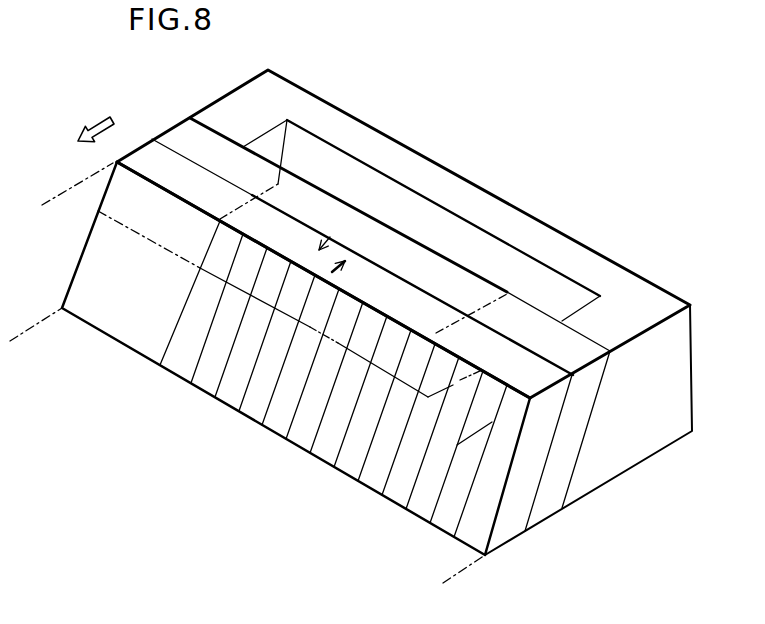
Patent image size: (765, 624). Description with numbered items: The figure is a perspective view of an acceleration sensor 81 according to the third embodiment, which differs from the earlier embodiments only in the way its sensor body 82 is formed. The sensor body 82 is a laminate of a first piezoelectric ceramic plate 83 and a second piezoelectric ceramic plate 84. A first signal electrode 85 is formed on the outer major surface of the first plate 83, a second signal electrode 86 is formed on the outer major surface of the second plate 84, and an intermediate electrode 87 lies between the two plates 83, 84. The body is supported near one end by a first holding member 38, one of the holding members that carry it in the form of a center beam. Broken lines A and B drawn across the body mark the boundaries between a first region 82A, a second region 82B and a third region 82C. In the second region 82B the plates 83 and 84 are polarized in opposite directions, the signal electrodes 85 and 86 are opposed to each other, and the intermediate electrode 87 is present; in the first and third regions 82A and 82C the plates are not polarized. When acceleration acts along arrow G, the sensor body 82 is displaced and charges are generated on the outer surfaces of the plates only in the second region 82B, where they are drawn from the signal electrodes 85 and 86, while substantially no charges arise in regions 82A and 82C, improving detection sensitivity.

The first holding member 38 is at (651, 414).
The acceleration sensor 81 is at (105, 87).
The sensor body 82 is at (110, 337).
The first region 82A is at (217, 150).
The second region 82B is at (375, 243).
The third region 82C is at (474, 338).
The first piezoelectric ceramic plate 83 is at (266, 230).
The second piezoelectric ceramic plate 84 is at (318, 213).
The first signal electrode 85 is at (360, 462).
The second signal electrode 86 is at (440, 253).
The intermediate electrode 87 is at (441, 297).
The broken line A is at (280, 181).
The broken line B is at (447, 330).
The arrow G is at (93, 117).